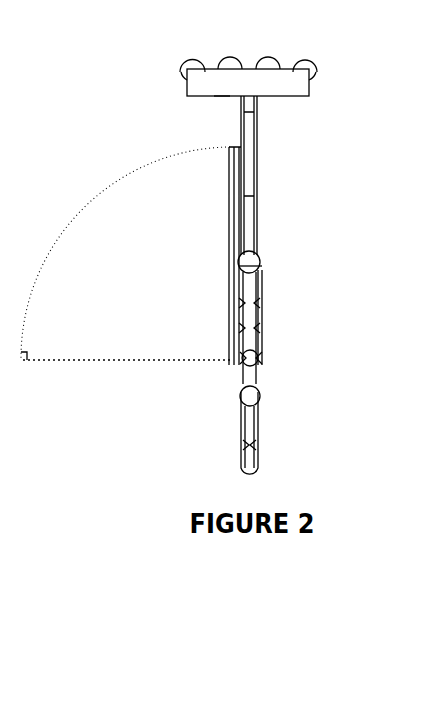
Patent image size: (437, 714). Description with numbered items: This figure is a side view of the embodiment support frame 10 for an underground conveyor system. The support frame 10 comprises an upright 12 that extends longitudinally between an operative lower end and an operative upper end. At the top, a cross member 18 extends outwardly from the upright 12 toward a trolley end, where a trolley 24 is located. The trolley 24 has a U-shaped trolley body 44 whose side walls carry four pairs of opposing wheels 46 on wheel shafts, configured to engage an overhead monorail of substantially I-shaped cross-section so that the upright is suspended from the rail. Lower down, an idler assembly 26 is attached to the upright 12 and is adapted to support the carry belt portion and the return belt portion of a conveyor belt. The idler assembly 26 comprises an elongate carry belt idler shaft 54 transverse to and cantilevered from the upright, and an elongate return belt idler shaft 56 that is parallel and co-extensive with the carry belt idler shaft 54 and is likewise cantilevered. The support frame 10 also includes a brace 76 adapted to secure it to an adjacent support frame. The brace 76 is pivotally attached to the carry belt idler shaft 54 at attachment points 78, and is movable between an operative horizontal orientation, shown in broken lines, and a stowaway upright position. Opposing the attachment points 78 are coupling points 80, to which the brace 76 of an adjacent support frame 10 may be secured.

The support frame 10 is at (277, 273).
The upright 12 is at (261, 218).
The cross member 18 is at (261, 150).
The trolley 24 is at (181, 94).
The idler assembly 26 is at (280, 356).
The trolley body 44 is at (221, 98).
The rollers 46 is at (269, 58).
The carry belt idler shaft 54 is at (258, 350).
The return belt idler shaft 56 is at (255, 447).
The brace 76 is at (222, 238).
The attachment points 78 is at (240, 362).
The coupling points 80 is at (262, 364).